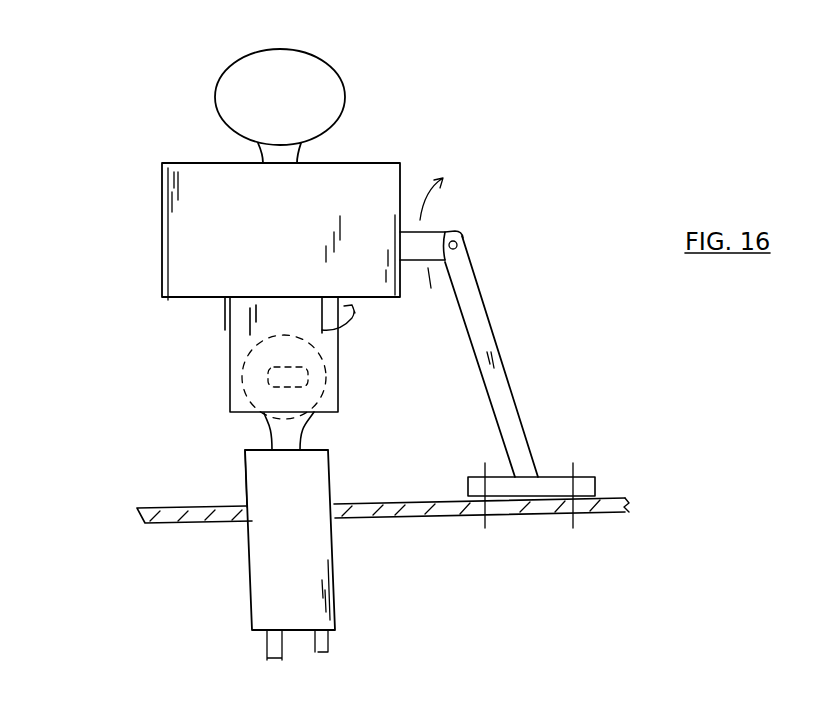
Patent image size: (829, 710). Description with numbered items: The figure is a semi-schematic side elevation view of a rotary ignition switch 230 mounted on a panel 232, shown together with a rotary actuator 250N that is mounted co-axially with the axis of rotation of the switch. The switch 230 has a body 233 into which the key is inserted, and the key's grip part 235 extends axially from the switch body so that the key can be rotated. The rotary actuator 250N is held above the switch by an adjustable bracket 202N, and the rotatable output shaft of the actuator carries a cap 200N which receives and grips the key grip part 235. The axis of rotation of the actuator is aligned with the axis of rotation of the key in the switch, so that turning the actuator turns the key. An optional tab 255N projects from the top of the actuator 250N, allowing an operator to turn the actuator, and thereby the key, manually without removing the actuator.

The tab 255N is at (322, 72).
The rotary actuator 250N is at (379, 156).
The cap 200N is at (356, 358).
The adjustable bracket 202N is at (525, 380).
The grip part 235 is at (263, 423).
The body 233 is at (245, 480).
The panel 232 is at (158, 494).
The ignition switch 230 is at (347, 592).